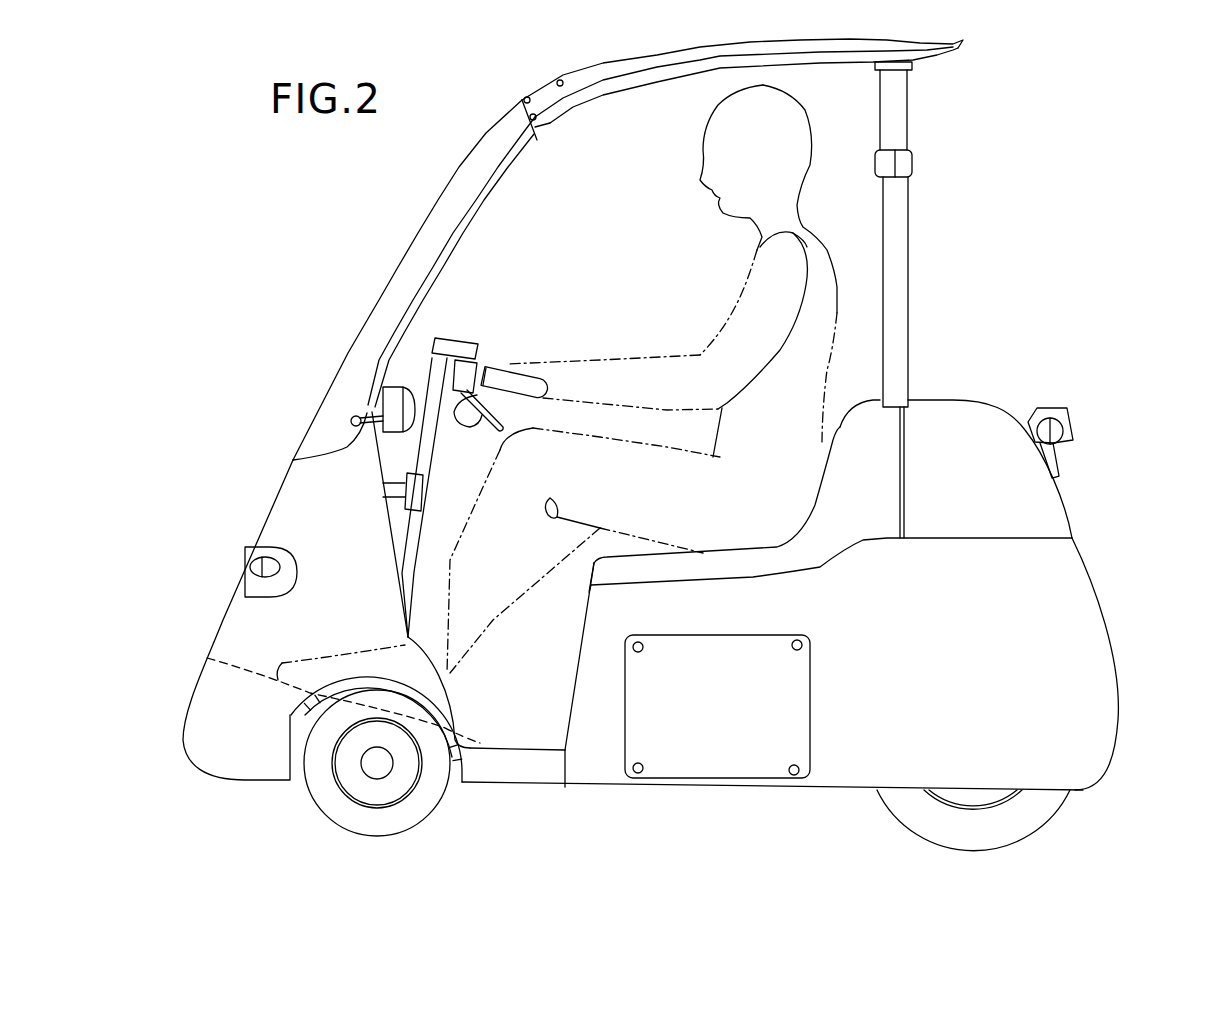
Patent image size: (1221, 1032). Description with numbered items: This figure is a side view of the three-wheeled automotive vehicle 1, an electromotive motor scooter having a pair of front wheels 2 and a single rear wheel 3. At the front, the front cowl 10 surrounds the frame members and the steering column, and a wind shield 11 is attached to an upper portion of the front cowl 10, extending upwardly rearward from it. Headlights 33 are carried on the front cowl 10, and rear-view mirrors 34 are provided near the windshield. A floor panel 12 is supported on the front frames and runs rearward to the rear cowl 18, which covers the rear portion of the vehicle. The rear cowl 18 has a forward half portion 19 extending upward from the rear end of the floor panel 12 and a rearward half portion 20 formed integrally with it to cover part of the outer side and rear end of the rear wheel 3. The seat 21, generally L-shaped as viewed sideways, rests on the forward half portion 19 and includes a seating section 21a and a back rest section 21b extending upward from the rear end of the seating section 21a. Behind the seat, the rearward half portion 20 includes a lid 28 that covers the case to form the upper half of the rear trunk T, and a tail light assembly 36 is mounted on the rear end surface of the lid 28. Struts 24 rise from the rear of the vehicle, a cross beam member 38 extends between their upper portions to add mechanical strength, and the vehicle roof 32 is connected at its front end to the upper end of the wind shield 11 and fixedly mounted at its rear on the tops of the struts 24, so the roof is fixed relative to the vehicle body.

The three-wheeled automotive vehicle 1 is at (1042, 246).
The front wheels 2 is at (330, 802).
The rear wheel 3 is at (1025, 818).
The front cowl 10 is at (303, 503).
The wind shield 11 is at (410, 257).
The floor panel 12 is at (527, 748).
The rear cowl 18 is at (598, 654).
The forward half portion 19 is at (598, 758).
The rearward half portion 20 is at (1085, 625).
The seat 21 is at (736, 545).
The seating section 21a is at (660, 560).
The back rest section 21b is at (830, 438).
The struts 24 is at (905, 240).
The lid 28 is at (960, 410).
The vehicle roof 32 is at (657, 60).
The headlights 33 is at (245, 565).
The rear-view mirrors 34 is at (393, 407).
The tail light assembly 36 is at (1062, 415).
The cross beam member 38 is at (912, 162).
The rear trunk T is at (1032, 505).